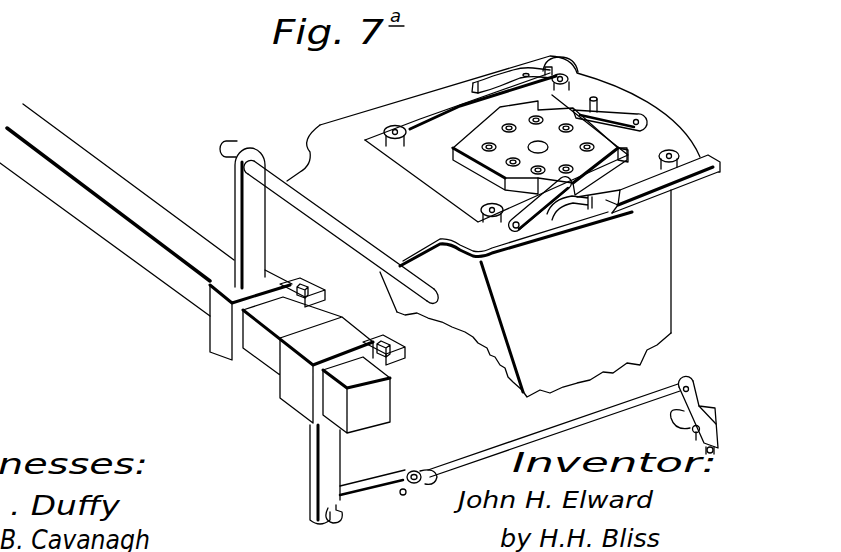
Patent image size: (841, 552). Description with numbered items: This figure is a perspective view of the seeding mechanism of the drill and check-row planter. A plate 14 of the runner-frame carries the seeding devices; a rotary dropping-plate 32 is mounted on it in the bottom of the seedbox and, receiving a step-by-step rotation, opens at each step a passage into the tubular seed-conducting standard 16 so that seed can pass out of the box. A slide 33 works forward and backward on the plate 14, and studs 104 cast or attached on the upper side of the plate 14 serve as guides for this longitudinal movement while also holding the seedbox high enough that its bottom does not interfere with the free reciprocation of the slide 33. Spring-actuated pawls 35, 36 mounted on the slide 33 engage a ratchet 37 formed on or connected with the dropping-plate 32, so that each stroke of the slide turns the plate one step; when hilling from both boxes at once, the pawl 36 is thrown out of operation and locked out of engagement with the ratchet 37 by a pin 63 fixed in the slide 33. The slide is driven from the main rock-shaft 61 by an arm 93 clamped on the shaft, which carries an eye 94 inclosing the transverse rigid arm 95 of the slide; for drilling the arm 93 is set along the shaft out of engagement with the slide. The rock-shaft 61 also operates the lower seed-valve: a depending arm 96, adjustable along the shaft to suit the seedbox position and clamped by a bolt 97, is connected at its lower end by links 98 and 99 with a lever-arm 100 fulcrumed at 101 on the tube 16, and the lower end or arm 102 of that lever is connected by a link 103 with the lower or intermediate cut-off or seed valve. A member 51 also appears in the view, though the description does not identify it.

The plate 14 is at (665, 113).
The tubular seed-conducting standard 16 is at (534, 293).
The rotary dropping-plate 32 is at (495, 155).
The slide 33 is at (623, 192).
The spring-actuated pawl 35 is at (534, 215).
The spring-actuated pawl 36 is at (513, 72).
The ratchet 37 is at (629, 157).
The arm 51 is at (620, 116).
The main rock-shaft 61 is at (138, 260).
The pin 63 is at (558, 65).
The arm 93 is at (243, 204).
The eye 94 is at (256, 153).
The transverse rigid arm 95 is at (224, 147).
The depending arm 96 is at (311, 458).
The bolt 97 is at (389, 345).
The link 98 is at (387, 481).
The link 99 is at (534, 437).
The lever-arm 100 is at (691, 394).
The fulcrum 101 is at (684, 423).
The lower end or arm of lever 102 is at (694, 434).
The link 103 is at (707, 451).
The stud 104 is at (384, 128).